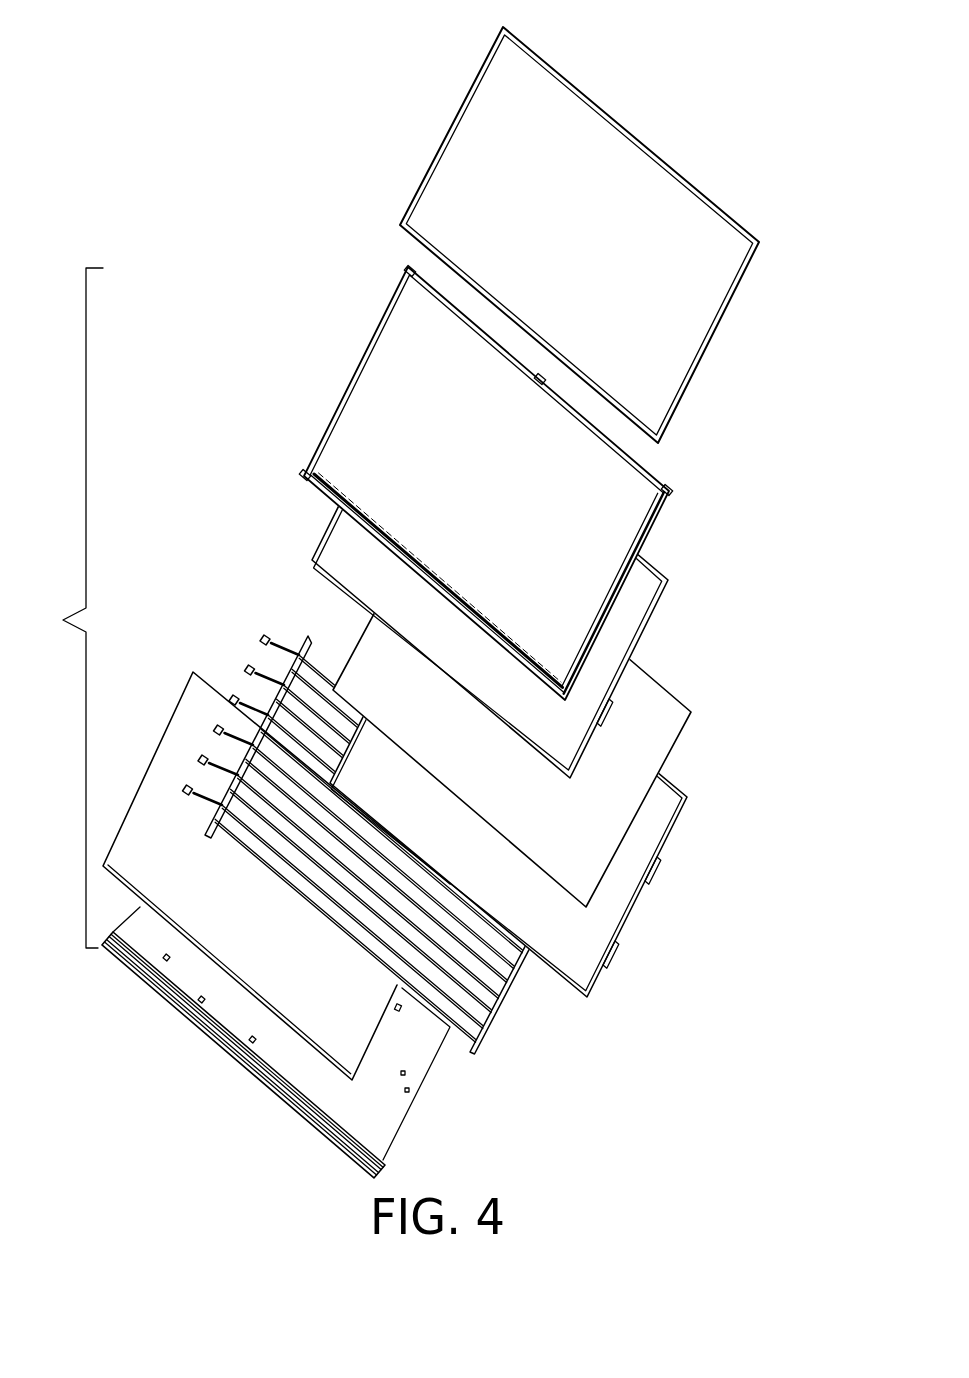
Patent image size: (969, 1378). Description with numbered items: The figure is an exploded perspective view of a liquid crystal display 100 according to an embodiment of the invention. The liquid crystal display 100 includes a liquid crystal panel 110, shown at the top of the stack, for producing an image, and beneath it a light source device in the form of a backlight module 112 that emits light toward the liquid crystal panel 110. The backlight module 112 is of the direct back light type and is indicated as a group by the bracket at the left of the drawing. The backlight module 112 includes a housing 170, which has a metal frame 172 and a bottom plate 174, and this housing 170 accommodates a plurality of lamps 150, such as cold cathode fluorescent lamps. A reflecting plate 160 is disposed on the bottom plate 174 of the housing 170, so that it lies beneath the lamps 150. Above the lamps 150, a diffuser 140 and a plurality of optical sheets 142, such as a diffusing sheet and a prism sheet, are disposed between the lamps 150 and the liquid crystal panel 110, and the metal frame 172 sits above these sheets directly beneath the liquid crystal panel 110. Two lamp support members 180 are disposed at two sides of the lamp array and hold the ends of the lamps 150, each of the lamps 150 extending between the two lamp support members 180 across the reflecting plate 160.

The liquid crystal display 100 is at (190, 127).
The liquid crystal panel 110 is at (718, 287).
The backlight module 112 is at (60, 608).
The diffuser 140 is at (648, 847).
The optical sheets 142 is at (638, 610).
The lamps 150 is at (468, 1048).
The reflecting plate 160 is at (197, 718).
The housing 170 is at (155, 932).
The metal frame 172 is at (653, 543).
The bottom plate 174 is at (395, 1113).
The lamp support members 180 is at (300, 640).